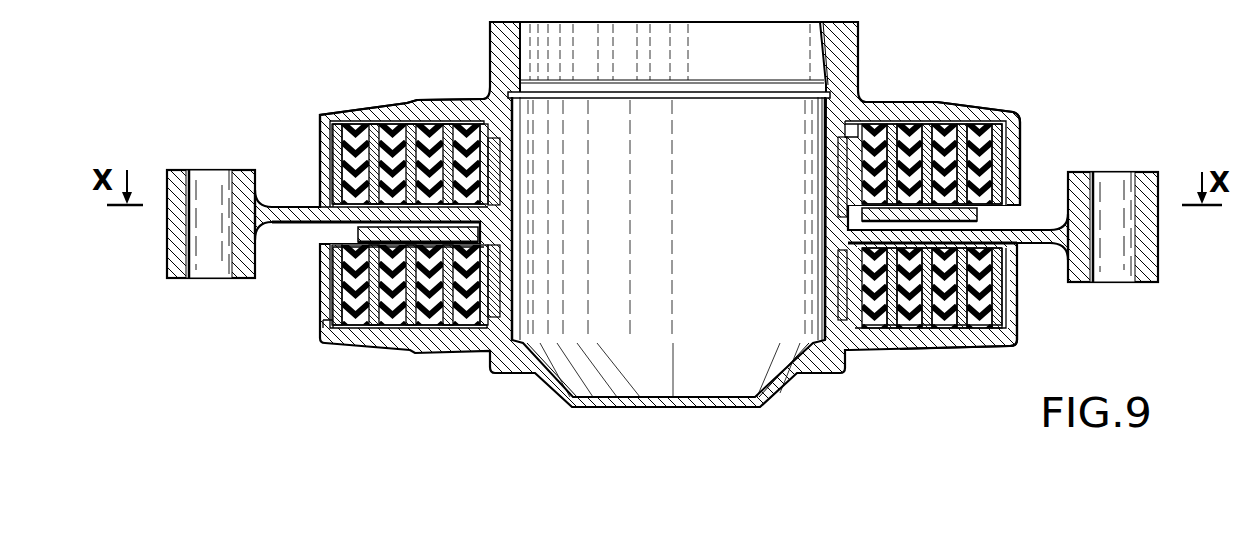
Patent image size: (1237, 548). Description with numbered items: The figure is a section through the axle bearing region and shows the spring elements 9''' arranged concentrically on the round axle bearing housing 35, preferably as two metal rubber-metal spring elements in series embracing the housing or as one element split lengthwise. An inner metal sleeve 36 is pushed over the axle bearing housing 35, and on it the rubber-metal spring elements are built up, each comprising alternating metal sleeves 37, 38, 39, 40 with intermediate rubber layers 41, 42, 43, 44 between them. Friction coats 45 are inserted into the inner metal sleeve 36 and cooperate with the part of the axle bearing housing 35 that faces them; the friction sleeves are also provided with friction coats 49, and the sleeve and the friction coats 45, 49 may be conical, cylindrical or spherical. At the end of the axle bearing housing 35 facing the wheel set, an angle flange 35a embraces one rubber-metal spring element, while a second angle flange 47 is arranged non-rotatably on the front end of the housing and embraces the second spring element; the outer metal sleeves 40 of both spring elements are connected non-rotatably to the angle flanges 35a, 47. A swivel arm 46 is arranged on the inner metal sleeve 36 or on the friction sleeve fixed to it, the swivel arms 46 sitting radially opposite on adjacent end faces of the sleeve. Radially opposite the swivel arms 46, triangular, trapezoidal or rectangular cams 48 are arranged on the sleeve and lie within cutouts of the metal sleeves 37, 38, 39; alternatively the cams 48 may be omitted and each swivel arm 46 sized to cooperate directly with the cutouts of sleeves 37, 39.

The spring element 9''' is at (223, 31).
The axle bearing housing 35 is at (507, 352).
The angle flange 35a is at (322, 113).
The inner metal sleeve 36 is at (487, 328).
The metal sleeve 37 is at (448, 328).
The metal sleeve 38 is at (410, 328).
The metal sleeve 39 is at (372, 328).
The outer metal sleeve 40 is at (333, 328).
The rubber layer 41 is at (877, 328).
The rubber layer 42 is at (913, 328).
The rubber layer 43 is at (942, 328).
The rubber layer 44 is at (983, 328).
The friction coat 45 is at (474, 120).
The swivel arm 46 is at (272, 208).
The angle flange 47 is at (1013, 342).
The cam 48 is at (358, 228).
The friction coat 49 is at (860, 135).